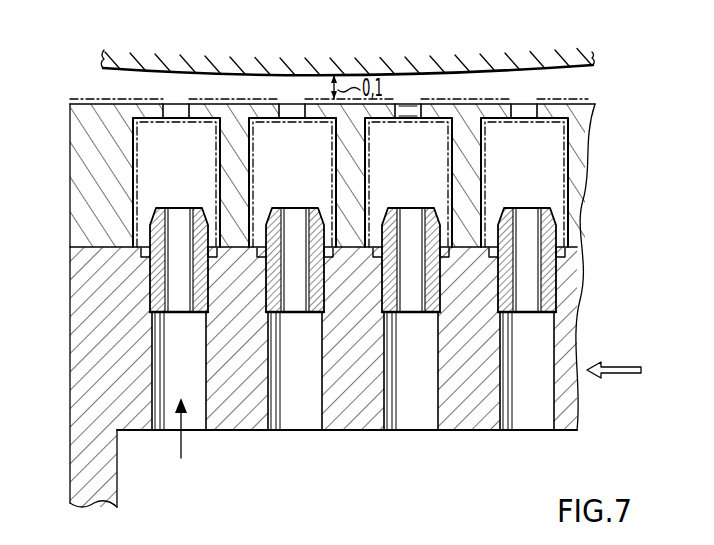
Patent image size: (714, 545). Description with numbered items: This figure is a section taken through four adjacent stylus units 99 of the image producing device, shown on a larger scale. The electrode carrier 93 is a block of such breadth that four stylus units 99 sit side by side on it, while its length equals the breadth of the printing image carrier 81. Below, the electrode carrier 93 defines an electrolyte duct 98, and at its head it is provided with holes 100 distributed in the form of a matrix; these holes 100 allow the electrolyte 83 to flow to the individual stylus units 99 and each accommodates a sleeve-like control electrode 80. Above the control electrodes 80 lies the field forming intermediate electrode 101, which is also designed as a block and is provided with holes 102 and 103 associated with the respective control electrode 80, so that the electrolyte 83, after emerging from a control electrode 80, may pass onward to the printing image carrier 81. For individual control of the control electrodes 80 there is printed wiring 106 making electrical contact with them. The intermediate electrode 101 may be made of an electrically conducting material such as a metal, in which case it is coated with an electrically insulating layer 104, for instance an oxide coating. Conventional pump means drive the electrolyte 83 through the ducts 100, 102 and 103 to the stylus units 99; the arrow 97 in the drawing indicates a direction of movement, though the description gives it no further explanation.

The control electrode 80 is at (165, 295).
The printing image carrier 81 is at (558, 65).
The electrolyte 83 is at (178, 451).
The electrode carrier 93 is at (90, 385).
The movement direction arrow 97 is at (621, 367).
The electrolyte duct 98 is at (277, 492).
The stylus unit 99 is at (450, 90).
The hole 100 is at (197, 415).
The field forming intermediate electrode 101 is at (572, 106).
The hole 102 is at (550, 183).
The hole 103 is at (410, 108).
The electrically insulating layer 104 is at (565, 133).
The printed wiring 106 is at (144, 251).